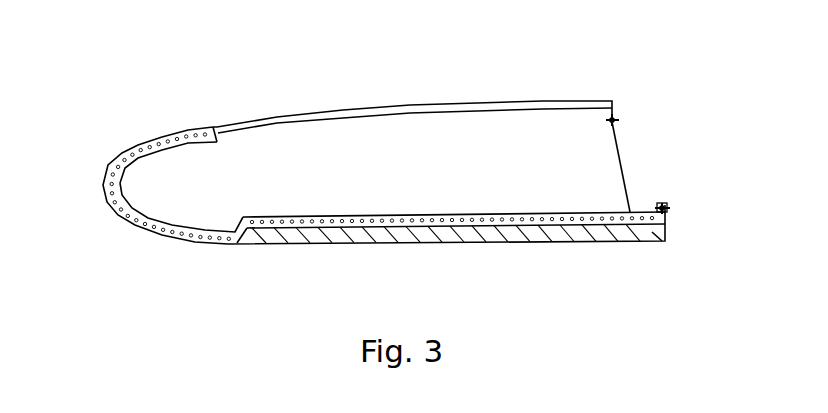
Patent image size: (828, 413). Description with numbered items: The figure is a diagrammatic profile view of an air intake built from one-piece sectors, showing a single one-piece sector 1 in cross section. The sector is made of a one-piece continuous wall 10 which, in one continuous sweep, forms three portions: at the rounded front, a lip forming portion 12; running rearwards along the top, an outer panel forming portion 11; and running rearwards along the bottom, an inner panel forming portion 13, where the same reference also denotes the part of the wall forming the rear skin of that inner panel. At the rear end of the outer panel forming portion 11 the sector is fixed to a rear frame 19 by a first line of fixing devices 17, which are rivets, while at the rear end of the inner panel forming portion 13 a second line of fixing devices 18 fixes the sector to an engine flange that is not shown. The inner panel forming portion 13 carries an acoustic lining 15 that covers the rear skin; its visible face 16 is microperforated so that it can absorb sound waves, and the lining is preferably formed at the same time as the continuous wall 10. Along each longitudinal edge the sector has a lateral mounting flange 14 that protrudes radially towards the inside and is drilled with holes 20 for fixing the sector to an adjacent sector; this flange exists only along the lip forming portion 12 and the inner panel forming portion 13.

The one-piece sector 1 is at (268, 116).
The one-piece continuous wall 10 is at (148, 214).
The outer panel forming portion 11 is at (437, 101).
The lip forming portion 12 is at (92, 190).
The inner panel forming portion 13 is at (306, 235).
The lateral mounting flange 14 is at (192, 145).
The acoustic lining 15 is at (350, 244).
The visible face 16 is at (462, 243).
The first line of fixing devices 17 is at (620, 118).
The second line of fixing devices 18 is at (670, 208).
The rear frame 19 is at (624, 180).
The holes 20 is at (199, 130).